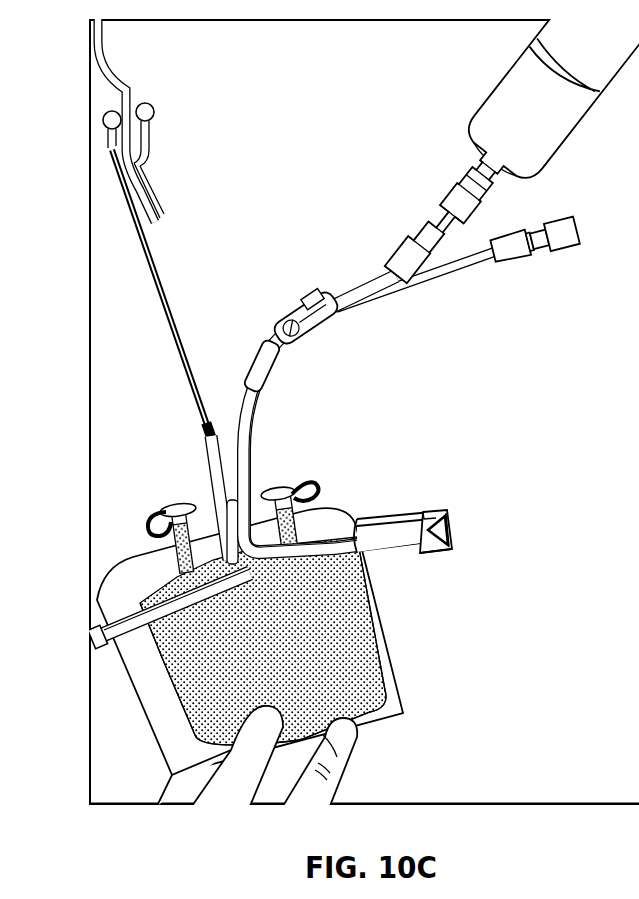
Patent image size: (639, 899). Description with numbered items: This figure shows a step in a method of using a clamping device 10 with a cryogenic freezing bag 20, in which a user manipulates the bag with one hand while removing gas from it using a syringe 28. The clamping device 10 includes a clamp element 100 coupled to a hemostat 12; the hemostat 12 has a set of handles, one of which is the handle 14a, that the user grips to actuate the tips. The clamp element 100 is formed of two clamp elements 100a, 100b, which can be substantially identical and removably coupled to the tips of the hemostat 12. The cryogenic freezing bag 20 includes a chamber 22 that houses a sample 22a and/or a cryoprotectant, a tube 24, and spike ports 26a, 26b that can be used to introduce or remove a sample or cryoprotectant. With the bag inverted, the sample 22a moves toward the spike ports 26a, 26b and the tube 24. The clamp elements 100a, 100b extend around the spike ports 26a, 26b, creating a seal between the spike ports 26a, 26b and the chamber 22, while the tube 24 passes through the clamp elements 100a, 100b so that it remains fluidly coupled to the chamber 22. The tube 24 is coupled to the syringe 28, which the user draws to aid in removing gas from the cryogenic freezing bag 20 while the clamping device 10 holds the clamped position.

The clamping device 10 is at (151, 392).
The hemostat 12 is at (203, 345).
The handle 14a is at (162, 226).
The cryogenic freezing bag 20 is at (299, 642).
The chamber 22 is at (373, 703).
The sample 22a is at (313, 645).
The tube 24 is at (250, 402).
The spike port 26a is at (172, 505).
The spike port 26b is at (278, 490).
The syringe 28 is at (490, 106).
The clamp element 100 is at (407, 491).
The clamp element 100a is at (408, 516).
The clamp element 100b is at (410, 550).